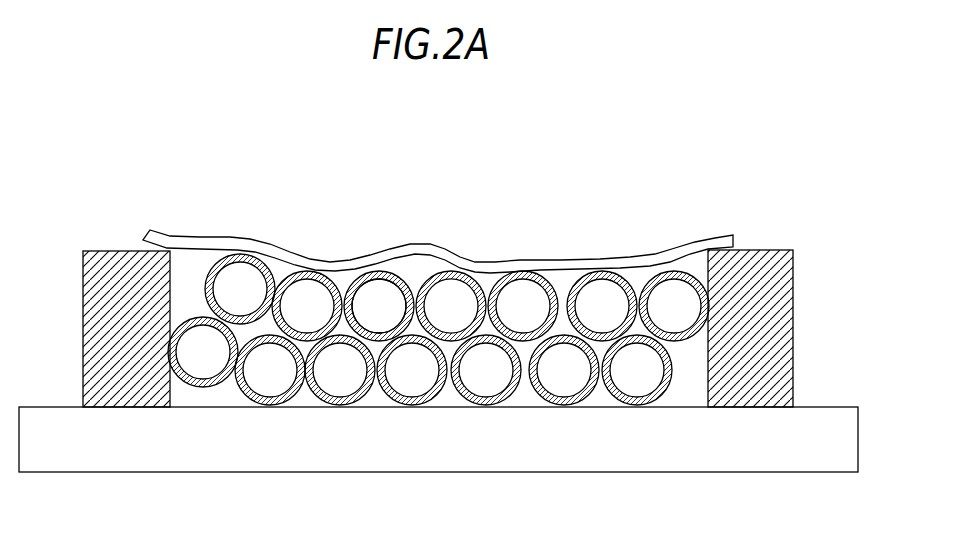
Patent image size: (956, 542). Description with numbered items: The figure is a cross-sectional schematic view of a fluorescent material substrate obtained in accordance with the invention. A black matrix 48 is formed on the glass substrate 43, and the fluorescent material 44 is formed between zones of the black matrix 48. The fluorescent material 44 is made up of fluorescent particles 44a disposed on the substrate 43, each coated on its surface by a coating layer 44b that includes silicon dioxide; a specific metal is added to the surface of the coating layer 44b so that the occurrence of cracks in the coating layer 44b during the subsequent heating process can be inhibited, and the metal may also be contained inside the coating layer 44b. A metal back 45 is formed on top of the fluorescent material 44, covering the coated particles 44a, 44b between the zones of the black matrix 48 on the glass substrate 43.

The glass substrate 43 is at (487, 462).
The fluorescent material 44 is at (438, 272).
The fluorescent particles 44a is at (360, 264).
The coating layer 44b is at (395, 287).
The metal back 45 is at (552, 267).
The black matrix 48 is at (763, 252).